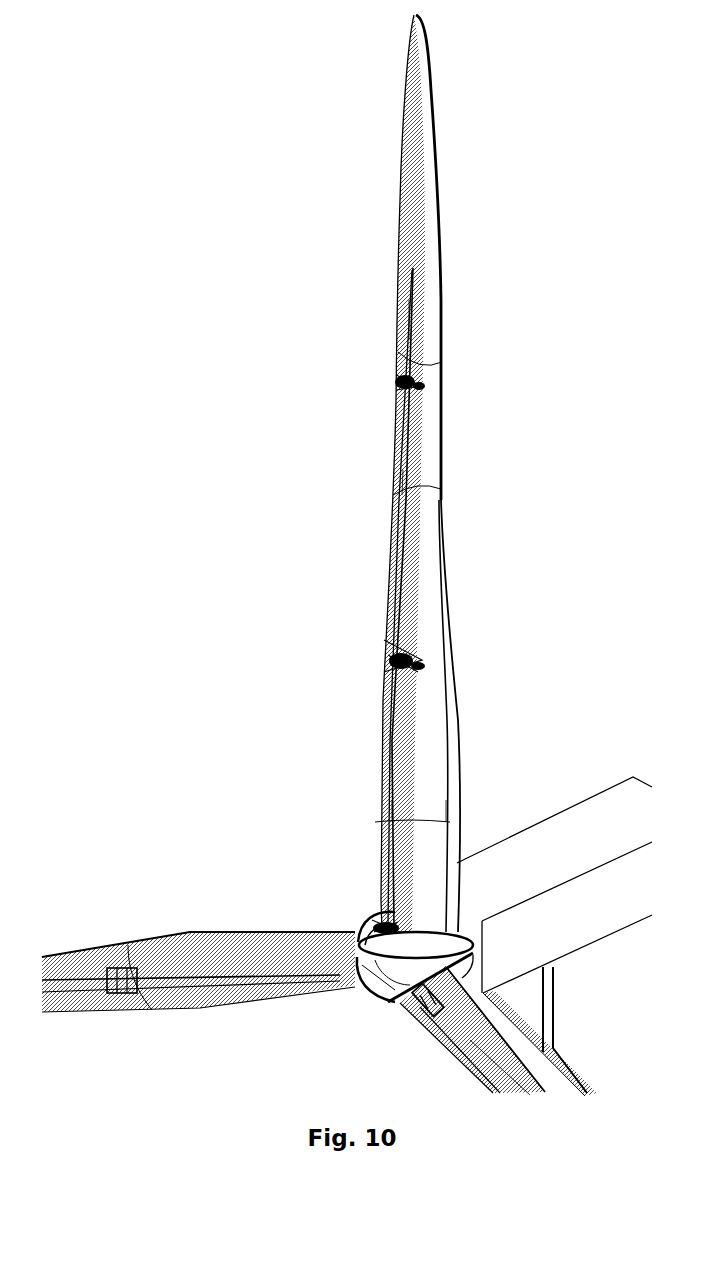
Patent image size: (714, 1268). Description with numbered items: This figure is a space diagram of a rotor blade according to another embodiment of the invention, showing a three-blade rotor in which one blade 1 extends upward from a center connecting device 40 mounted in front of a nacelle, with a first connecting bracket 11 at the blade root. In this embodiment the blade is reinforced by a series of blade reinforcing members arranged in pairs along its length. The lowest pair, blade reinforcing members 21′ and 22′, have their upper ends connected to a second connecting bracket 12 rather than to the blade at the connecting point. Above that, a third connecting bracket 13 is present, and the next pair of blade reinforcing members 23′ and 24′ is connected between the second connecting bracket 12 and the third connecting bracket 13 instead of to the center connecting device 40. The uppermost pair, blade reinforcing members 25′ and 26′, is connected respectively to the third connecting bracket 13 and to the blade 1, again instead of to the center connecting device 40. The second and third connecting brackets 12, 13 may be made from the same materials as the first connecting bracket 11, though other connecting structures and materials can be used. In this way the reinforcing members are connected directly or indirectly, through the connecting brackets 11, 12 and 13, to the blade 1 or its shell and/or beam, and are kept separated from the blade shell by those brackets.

The blade 1 is at (428, 243).
The connecting bracket 11 is at (463, 907).
The second connecting bracket 12 is at (422, 666).
The third connecting bracket 13 is at (425, 386).
The blade reinforcing member 21′ is at (382, 822).
The blade reinforcing member 22′ is at (445, 823).
The blade reinforcing member 23′ is at (395, 494).
The blade reinforcing member 24′ is at (440, 491).
The blade reinforcing member 25′ is at (400, 351).
The blade reinforcing member 26′ is at (441, 364).
The center connecting device 40 is at (366, 1015).